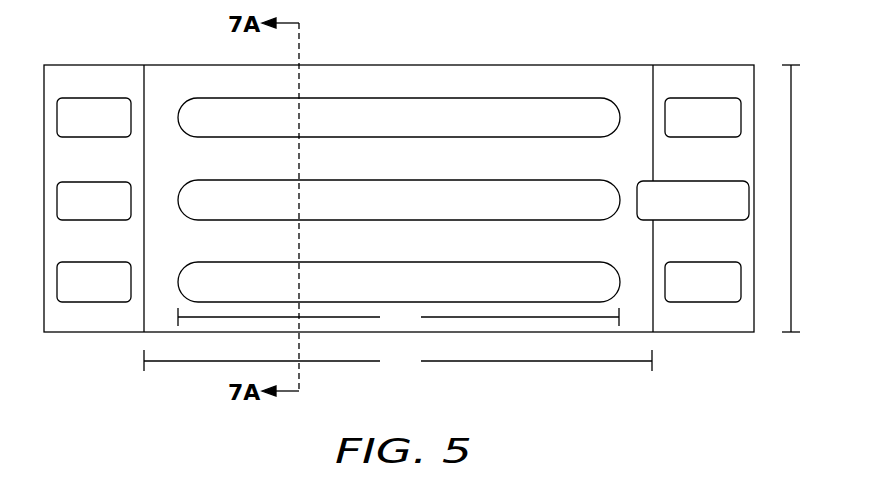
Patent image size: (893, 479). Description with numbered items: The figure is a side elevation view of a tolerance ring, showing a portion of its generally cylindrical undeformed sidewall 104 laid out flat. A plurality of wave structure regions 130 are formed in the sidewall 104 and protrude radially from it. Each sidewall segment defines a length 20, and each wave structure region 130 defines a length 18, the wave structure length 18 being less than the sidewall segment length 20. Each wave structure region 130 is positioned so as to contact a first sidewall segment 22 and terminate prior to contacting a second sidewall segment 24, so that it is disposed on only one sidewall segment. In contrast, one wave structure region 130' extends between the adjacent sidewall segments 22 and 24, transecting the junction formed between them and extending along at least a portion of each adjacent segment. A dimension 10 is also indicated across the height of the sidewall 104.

The cooling plate / heat exchanger width 10 is at (792, 175).
The wave structure length 18 is at (398, 318).
The sidewall segment length 20 is at (398, 362).
The first sidewall segment 22 is at (540, 65).
The second sidewall segment 24 is at (680, 65).
The sidewall 104 is at (692, 333).
The wave structure region 130 is at (399, 200).
The wave structure region 130' is at (693, 200).